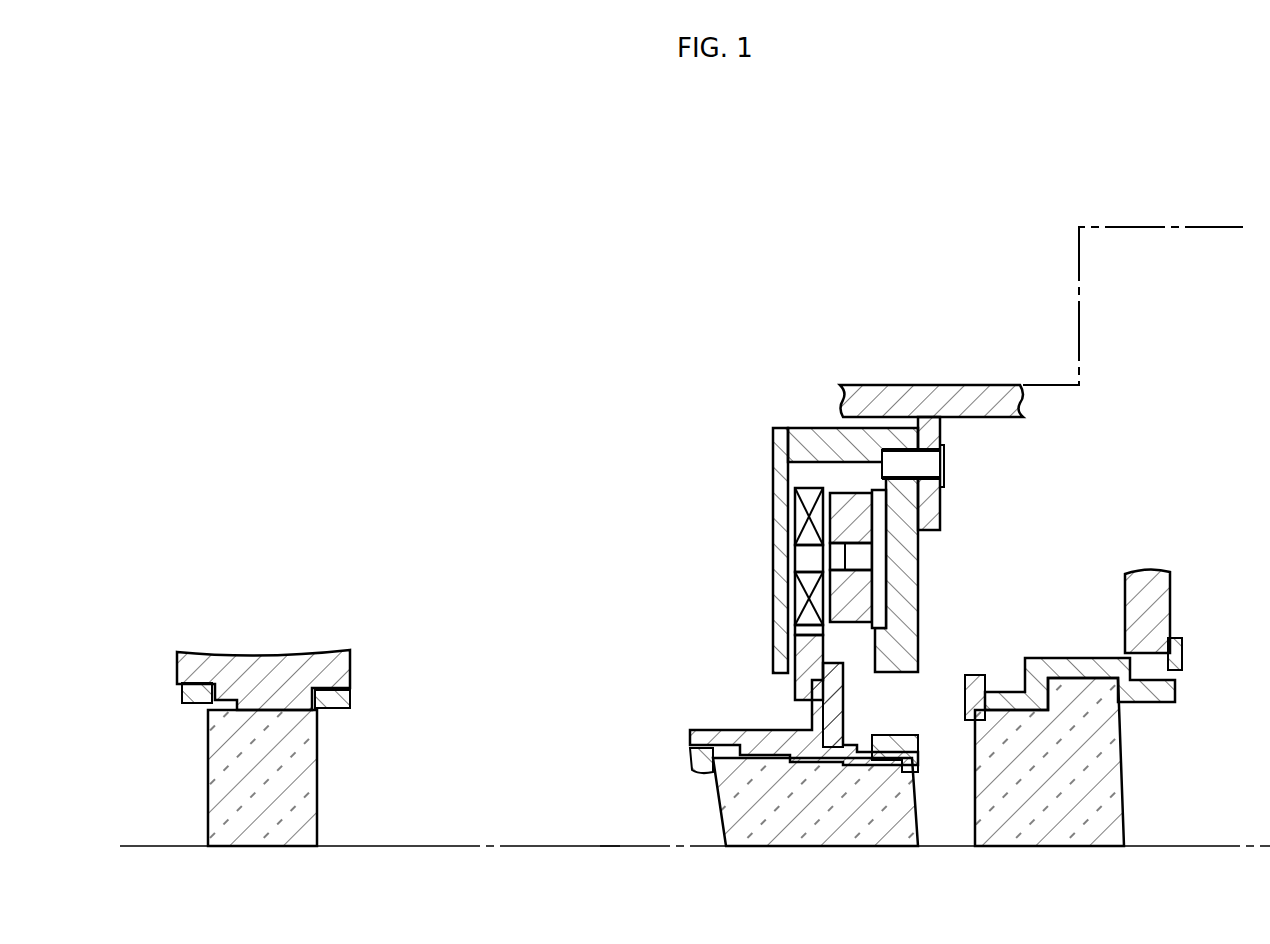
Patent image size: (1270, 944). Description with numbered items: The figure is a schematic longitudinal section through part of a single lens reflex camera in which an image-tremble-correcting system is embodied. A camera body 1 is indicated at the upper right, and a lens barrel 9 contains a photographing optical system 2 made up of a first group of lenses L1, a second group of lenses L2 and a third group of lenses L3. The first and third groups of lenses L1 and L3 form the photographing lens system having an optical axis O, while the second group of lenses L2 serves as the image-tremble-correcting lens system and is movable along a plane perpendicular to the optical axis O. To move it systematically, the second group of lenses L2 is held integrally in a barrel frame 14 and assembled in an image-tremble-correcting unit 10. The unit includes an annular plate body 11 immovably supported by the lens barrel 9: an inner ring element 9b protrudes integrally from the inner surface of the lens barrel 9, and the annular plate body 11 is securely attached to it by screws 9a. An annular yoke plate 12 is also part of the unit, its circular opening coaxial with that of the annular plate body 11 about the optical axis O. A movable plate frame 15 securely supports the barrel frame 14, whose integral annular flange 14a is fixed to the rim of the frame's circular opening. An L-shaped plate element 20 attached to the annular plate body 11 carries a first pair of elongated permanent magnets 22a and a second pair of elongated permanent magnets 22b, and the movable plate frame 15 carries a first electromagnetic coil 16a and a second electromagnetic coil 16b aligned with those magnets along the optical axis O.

The camera body 1 is at (1192, 246).
The photographing optical system 2 is at (190, 773).
The lens barrel 9 is at (276, 668).
The screws 9a is at (945, 463).
The inner ring element 9b is at (942, 505).
The image-tremble-correcting unit 10 is at (830, 561).
The annular plate body 11 is at (900, 641).
The annular yoke plate 12 is at (775, 488).
The barrel frame 14 is at (757, 740).
The annular flange 14a is at (848, 696).
The movable plate frame 15 is at (806, 650).
The first electromagnetic coil 16a is at (710, 561).
The second electromagnetic coil 16b is at (805, 515).
The L-shaped plate element 20 is at (882, 597).
The first pair of elongated permanent magnets 22a is at (946, 557).
The second pair of elongated permanent magnets 22b is at (855, 520).
The first group of lenses L1 is at (288, 786).
The second group of lenses L2 is at (745, 806).
The third group of lenses L3 is at (1088, 776).
The optical axis O is at (608, 848).